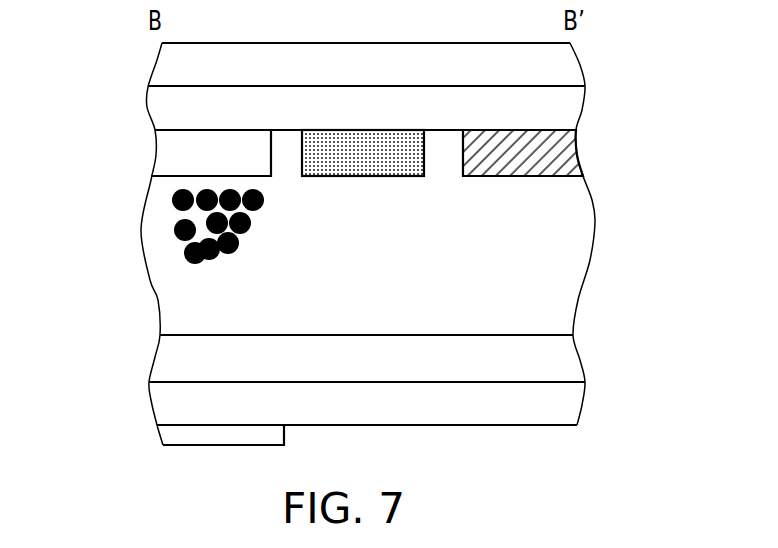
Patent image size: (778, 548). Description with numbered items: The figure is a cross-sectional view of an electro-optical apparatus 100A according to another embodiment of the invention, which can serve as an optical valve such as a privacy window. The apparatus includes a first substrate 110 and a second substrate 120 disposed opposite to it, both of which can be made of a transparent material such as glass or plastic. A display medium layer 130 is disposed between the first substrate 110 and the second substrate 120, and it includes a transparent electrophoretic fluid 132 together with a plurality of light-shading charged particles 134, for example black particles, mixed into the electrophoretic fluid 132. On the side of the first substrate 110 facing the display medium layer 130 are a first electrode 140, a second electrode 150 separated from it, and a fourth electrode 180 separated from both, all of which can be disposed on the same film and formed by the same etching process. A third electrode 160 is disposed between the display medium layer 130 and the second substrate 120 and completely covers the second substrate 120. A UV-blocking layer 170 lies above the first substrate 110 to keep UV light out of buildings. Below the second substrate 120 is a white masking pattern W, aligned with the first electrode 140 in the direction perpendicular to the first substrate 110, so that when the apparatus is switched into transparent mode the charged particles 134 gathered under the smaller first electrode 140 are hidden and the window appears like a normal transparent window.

The electro-optical apparatus 100A is at (632, 502).
The UV-blocking layer 170 is at (180, 62).
The first substrate 110 is at (185, 107).
The first electrode 140 is at (180, 155).
The second electrode 150 is at (553, 157).
The fourth electrode 180 is at (385, 160).
The display medium layer 130 is at (70, 217).
The electrophoretic fluid 132 is at (190, 300).
The charged particles 134 is at (173, 203).
The third electrode 160 is at (183, 360).
The second substrate 120 is at (180, 398).
The white masking pattern W is at (180, 437).